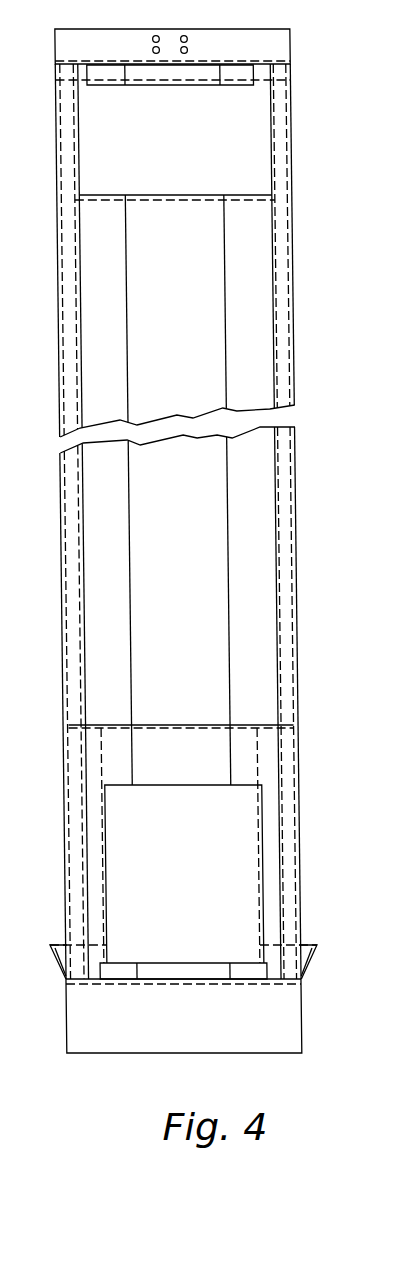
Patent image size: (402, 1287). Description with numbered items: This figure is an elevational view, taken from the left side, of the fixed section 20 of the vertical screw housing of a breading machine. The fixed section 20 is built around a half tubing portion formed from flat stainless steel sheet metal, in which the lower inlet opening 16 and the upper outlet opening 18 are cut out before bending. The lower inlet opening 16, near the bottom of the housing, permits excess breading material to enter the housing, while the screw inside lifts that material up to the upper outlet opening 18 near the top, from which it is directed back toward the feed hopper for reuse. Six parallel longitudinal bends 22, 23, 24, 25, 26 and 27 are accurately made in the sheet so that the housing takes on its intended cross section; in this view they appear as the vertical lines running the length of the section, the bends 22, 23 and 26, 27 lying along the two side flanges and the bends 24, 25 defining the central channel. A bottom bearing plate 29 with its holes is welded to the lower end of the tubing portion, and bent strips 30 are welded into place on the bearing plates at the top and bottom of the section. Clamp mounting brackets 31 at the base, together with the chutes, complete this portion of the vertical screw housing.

The lower inlet opening 16 is at (250, 827).
The upper outlet opening 18 is at (268, 143).
The fixed section of the vertical screw housing 20 is at (284, 533).
The longitudinal bend 22 is at (61, 620).
The longitudinal bend 23 is at (78, 613).
The longitudinal bend 24 is at (124, 535).
The longitudinal bend 25 is at (221, 573).
The longitudinal bend 26 is at (270, 613).
The longitudinal bend 27 is at (291, 590).
The bottom bearing plate 29 is at (181, 983).
The bent strips 30 is at (183, 87).
The clamp mounting brackets 31 is at (304, 943).